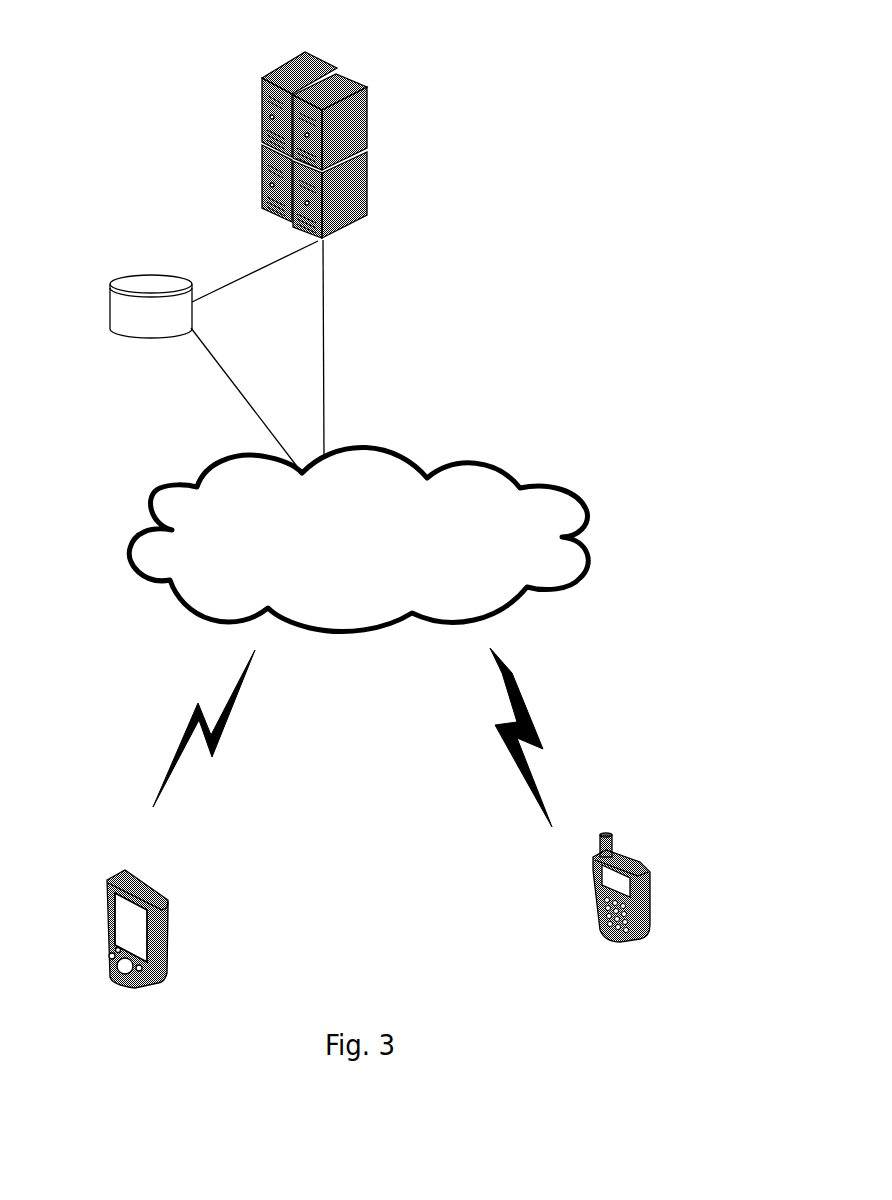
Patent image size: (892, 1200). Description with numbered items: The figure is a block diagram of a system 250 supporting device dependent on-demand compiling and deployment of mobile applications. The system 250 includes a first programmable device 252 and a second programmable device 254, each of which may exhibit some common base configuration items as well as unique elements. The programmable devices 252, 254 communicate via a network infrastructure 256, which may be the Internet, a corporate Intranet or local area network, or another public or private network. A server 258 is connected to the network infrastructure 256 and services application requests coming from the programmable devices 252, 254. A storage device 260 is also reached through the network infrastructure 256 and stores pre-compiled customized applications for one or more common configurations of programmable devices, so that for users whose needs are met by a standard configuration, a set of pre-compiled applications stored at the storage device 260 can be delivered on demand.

The system 250 is at (546, 40).
The first programmable device 252 is at (172, 910).
The second programmable device 254 is at (653, 890).
The network infrastructure 256 is at (553, 485).
The server 258 is at (377, 180).
The storage device 260 is at (108, 310).